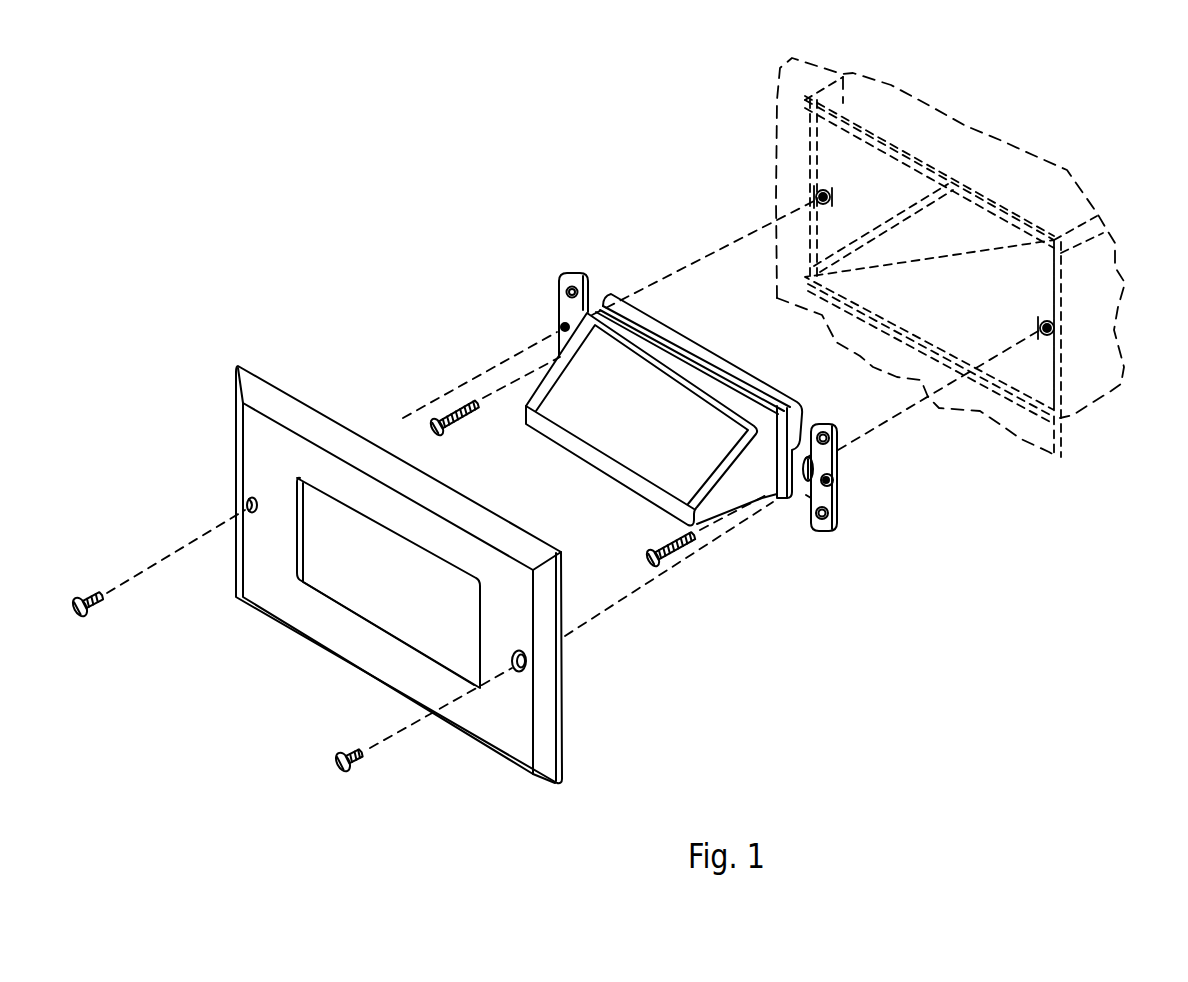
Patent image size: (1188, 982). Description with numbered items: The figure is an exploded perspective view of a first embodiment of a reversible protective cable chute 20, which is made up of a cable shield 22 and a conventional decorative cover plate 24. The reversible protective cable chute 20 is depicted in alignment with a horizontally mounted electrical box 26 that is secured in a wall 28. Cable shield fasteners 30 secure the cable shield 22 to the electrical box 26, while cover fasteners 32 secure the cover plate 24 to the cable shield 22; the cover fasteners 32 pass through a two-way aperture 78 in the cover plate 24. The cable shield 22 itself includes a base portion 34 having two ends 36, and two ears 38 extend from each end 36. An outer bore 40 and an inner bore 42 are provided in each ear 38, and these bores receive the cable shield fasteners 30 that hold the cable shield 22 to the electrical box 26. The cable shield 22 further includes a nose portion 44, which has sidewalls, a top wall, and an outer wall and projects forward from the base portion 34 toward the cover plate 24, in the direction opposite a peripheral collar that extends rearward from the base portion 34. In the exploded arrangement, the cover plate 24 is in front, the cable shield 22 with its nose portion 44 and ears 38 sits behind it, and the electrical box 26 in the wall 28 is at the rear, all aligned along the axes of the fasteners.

The reversible protective cable chute 20 is at (215, 258).
The cable shield 22 is at (512, 347).
The cover plate 24 is at (622, 697).
The electrical box 26 is at (1088, 407).
The wall 28 is at (817, 94).
The cable shield fastener 30 is at (680, 555).
The cover fastener 32 is at (357, 765).
The base portion of cable shield 34 is at (687, 332).
The end of cable shield 36 is at (800, 428).
The ear 38 is at (825, 530).
The outer bore 40 is at (833, 480).
The inner bore 42 is at (813, 463).
The nose portion 44 is at (605, 443).
The two-way aperture in cover plate 78 is at (533, 665).